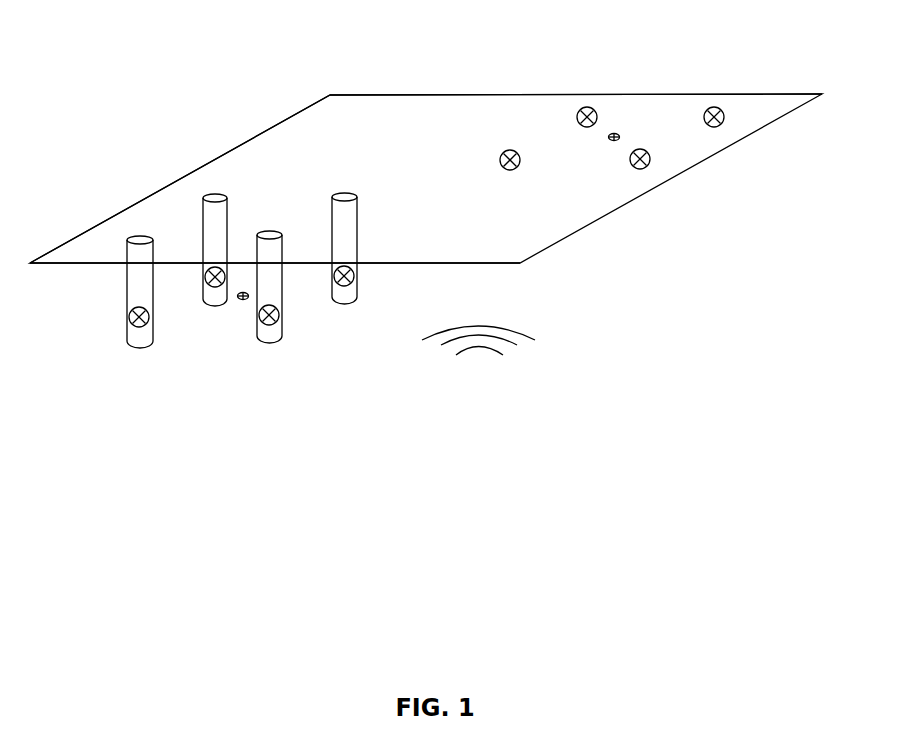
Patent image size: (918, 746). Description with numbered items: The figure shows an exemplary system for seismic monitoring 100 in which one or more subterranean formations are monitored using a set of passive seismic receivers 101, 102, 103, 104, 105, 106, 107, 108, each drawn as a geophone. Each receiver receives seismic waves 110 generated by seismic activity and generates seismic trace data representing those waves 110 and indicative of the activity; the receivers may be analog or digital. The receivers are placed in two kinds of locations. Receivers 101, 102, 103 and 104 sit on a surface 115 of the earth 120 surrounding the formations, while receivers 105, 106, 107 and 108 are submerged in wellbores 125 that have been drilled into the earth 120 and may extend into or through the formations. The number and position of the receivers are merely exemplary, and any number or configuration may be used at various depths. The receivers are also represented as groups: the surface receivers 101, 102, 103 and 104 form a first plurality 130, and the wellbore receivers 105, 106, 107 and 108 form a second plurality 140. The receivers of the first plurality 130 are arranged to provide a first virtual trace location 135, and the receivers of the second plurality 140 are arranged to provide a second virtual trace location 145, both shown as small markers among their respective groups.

The system for seismic monitoring 100 is at (249, 35).
The seismic receiver 101 is at (646, 170).
The seismic receiver 102 is at (720, 127).
The seismic receiver 103 is at (578, 113).
The seismic receiver 104 is at (502, 157).
The seismic receiver 105 is at (281, 321).
The seismic receiver 106 is at (354, 277).
The seismic receiver 107 is at (206, 279).
The seismic receiver 108 is at (130, 322).
The seismic waves 110 is at (478, 358).
The surface 115 is at (310, 120).
The earth 120 is at (482, 270).
The wellbores 125 is at (214, 221).
The first plurality 130 is at (661, 113).
The first virtual trace location 135 is at (612, 142).
The second plurality 140 is at (182, 383).
The second virtual trace location 145 is at (242, 302).